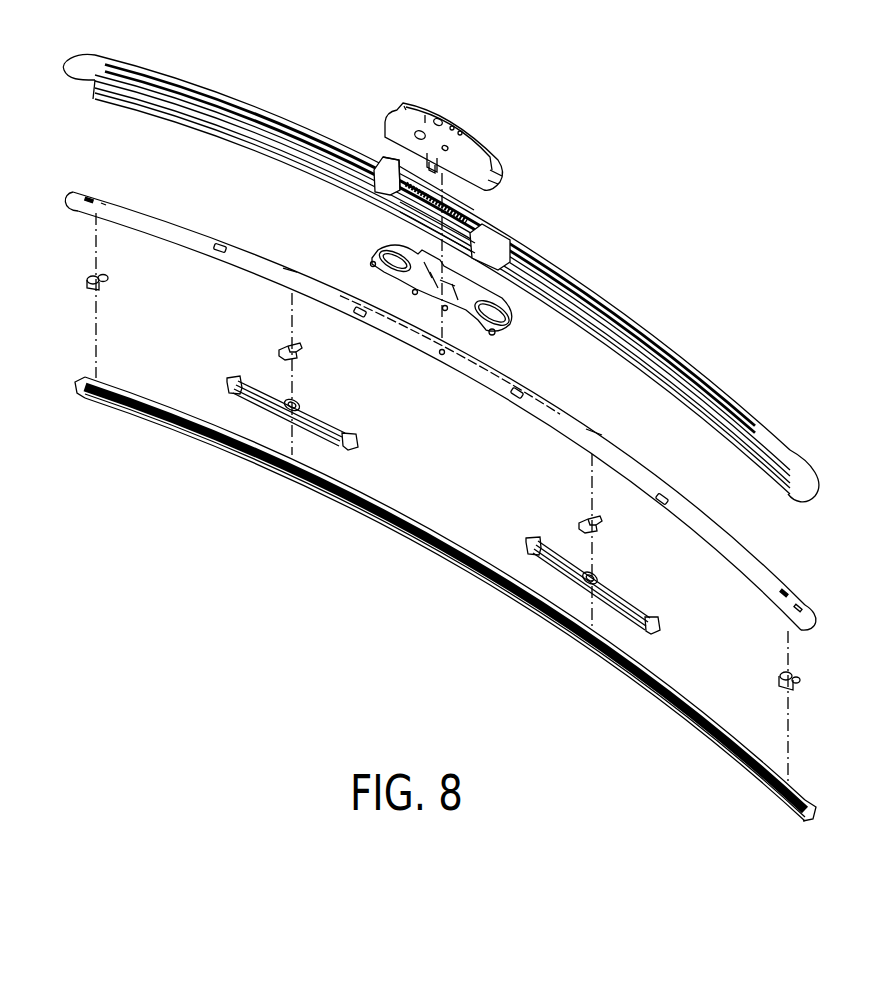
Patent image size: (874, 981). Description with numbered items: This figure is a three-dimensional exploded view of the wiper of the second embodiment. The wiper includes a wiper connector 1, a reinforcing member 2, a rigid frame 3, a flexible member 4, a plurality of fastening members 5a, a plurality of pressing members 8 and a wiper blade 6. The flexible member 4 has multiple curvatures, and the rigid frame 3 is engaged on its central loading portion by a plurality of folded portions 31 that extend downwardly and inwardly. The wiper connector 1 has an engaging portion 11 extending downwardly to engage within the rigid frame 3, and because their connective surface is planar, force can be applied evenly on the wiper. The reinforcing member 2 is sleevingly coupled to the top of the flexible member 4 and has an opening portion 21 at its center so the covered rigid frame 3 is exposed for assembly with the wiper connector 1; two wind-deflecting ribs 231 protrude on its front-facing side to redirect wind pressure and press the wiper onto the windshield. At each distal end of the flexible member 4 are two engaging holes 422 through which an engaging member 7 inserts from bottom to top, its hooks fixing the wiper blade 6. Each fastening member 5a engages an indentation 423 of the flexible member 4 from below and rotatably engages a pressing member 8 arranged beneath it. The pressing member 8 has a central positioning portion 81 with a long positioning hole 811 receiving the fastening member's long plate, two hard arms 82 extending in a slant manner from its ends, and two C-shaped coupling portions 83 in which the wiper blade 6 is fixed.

The wiper connector 1 is at (488, 128).
The engaging portion 11 is at (426, 168).
The reinforcing member 2 is at (642, 323).
The opening portion 21 is at (456, 218).
The wind-deflecting ribs 231 is at (596, 308).
The rigid frame 3 is at (370, 256).
The folded portions 31 is at (492, 336).
The flexible member 4 is at (756, 546).
The engaging holes 422 is at (102, 204).
The indentation 423 is at (294, 270).
The fastening member 5a is at (279, 343).
The wiper blade 6 is at (430, 542).
The engaging member 7 is at (82, 272).
The pressing member 8 is at (336, 417).
The positioning portion 81 is at (286, 416).
The long positioning hole 811 is at (300, 400).
The hard arms 82 is at (318, 432).
The coupling portions 83 is at (356, 441).